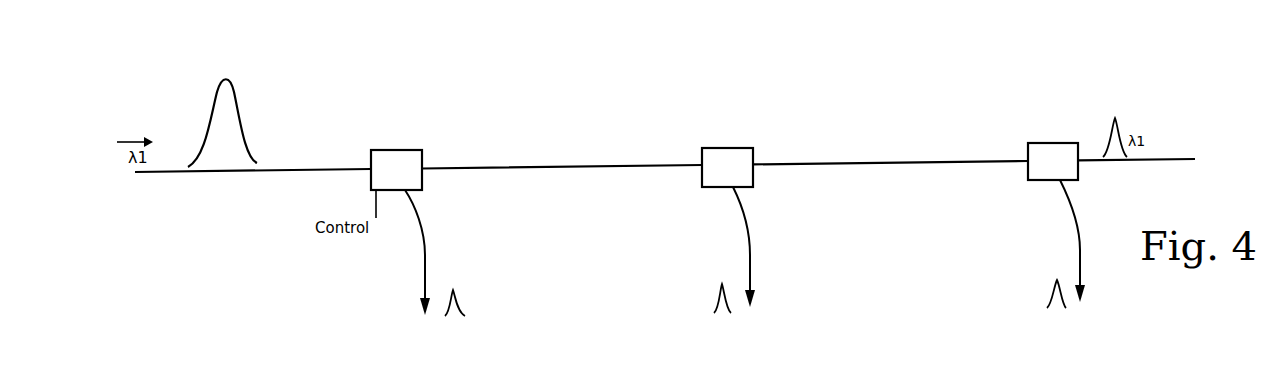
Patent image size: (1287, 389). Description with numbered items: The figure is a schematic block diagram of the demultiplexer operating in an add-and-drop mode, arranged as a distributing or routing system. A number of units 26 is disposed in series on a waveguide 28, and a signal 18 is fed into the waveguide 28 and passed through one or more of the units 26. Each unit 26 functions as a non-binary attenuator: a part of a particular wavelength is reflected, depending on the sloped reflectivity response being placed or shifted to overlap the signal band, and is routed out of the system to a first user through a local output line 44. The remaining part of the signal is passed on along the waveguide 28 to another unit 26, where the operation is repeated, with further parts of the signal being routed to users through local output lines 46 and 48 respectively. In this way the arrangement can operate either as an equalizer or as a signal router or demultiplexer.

The signal 18 is at (235, 87).
The unit 26 is at (388, 150).
The waveguide 28 is at (508, 167).
The local output line 44 is at (427, 265).
The local output line 46 is at (751, 262).
The local output line 48 is at (1081, 253).